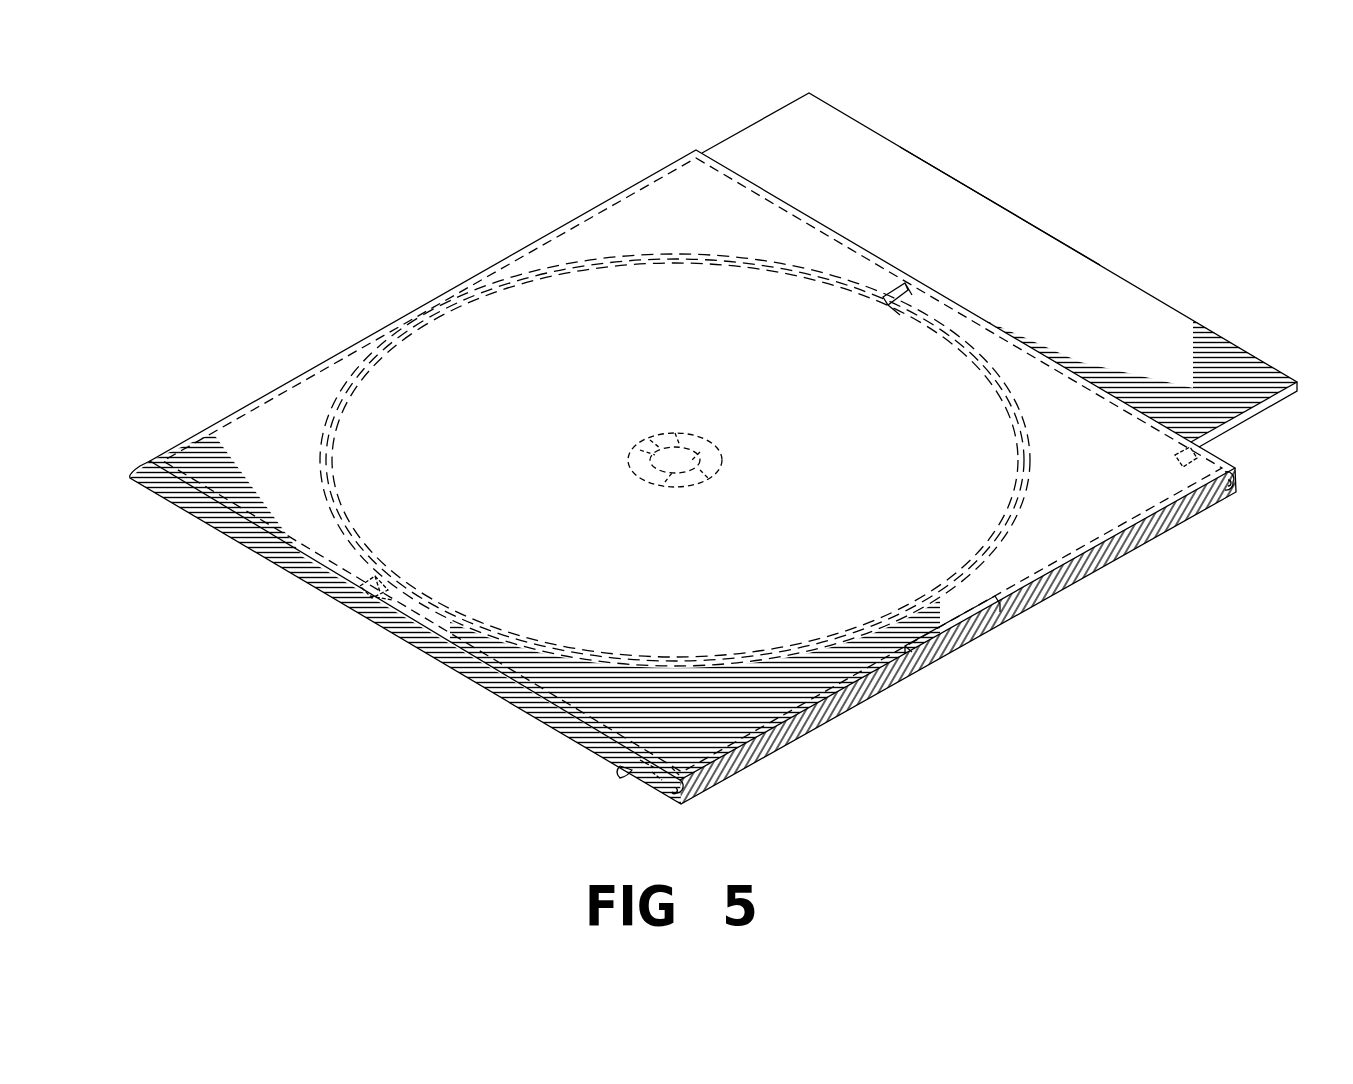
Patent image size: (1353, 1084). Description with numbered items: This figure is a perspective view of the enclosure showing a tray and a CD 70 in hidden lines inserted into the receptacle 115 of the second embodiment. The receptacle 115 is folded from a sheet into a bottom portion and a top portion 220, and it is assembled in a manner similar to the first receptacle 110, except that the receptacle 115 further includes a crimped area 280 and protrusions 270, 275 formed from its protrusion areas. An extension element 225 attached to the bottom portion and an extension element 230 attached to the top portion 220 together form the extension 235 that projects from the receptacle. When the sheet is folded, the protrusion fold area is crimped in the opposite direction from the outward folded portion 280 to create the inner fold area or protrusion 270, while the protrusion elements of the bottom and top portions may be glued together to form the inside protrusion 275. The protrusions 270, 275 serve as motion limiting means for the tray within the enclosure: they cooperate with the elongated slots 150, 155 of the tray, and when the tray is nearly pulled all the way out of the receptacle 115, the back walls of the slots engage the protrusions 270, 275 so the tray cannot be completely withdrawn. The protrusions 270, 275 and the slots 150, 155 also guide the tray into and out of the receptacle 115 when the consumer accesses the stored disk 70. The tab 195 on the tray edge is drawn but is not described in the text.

The receptacle 115 is at (907, 140).
The extension 235 is at (1018, 219).
The extension element 230 is at (1248, 366).
The extension element 225 is at (1249, 421).
The receptacle 110 is at (806, 248).
The CD 70 is at (986, 460).
The top portion 220 is at (237, 432).
The crimped area 280 is at (537, 706).
The elongated slot 150 is at (382, 627).
The elongated slot 155 is at (918, 307).
The latch tab 195 is at (956, 648).
The inside protrusion 275 is at (1212, 492).
The inner fold area or protrusion 270 is at (722, 775).